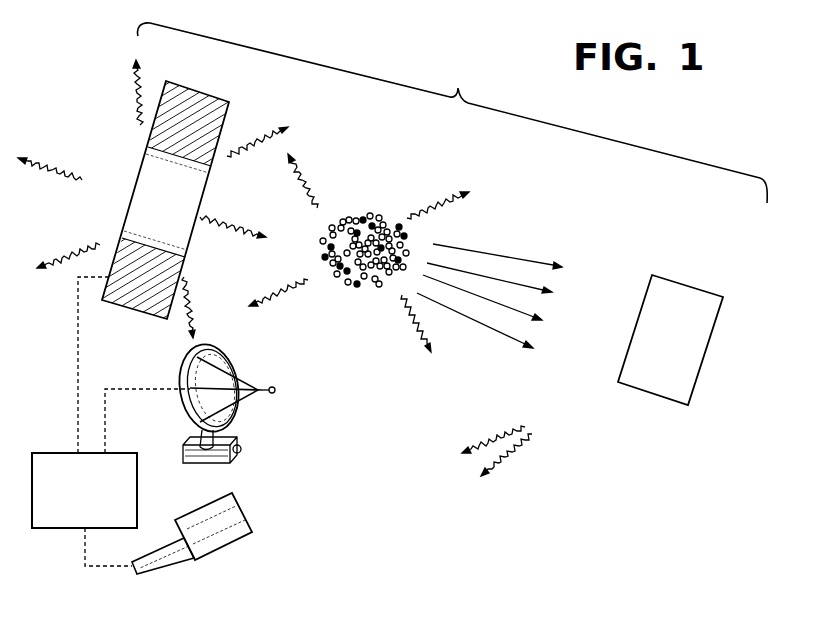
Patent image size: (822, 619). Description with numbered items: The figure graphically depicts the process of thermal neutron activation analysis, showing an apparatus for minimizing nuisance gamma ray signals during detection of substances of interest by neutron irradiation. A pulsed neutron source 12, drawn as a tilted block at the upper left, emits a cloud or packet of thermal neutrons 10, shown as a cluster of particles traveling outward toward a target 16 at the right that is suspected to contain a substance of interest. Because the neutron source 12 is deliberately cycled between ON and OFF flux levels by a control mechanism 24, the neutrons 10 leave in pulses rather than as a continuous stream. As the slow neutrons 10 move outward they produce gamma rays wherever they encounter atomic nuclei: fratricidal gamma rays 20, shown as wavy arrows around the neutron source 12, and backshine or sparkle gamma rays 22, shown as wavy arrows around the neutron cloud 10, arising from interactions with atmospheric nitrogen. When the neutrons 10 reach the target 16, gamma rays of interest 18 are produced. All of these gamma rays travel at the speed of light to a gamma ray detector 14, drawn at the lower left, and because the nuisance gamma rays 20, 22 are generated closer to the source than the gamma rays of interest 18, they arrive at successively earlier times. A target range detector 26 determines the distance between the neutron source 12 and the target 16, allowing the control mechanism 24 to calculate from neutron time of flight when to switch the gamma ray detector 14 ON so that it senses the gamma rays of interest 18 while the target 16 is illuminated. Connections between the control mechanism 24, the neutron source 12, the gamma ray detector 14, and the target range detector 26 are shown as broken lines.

The thermal neutrons 10 is at (369, 215).
The pulsed neutron source 12 is at (227, 118).
The gamma ray detector 14 is at (228, 547).
The target 16 is at (710, 348).
The gamma rays of interest 18 is at (498, 433).
The fratricidal gamma rays 20 is at (136, 104).
The backshine gamma rays 22 is at (318, 207).
The control mechanism 24 is at (96, 500).
The target range detector 26 is at (237, 410).